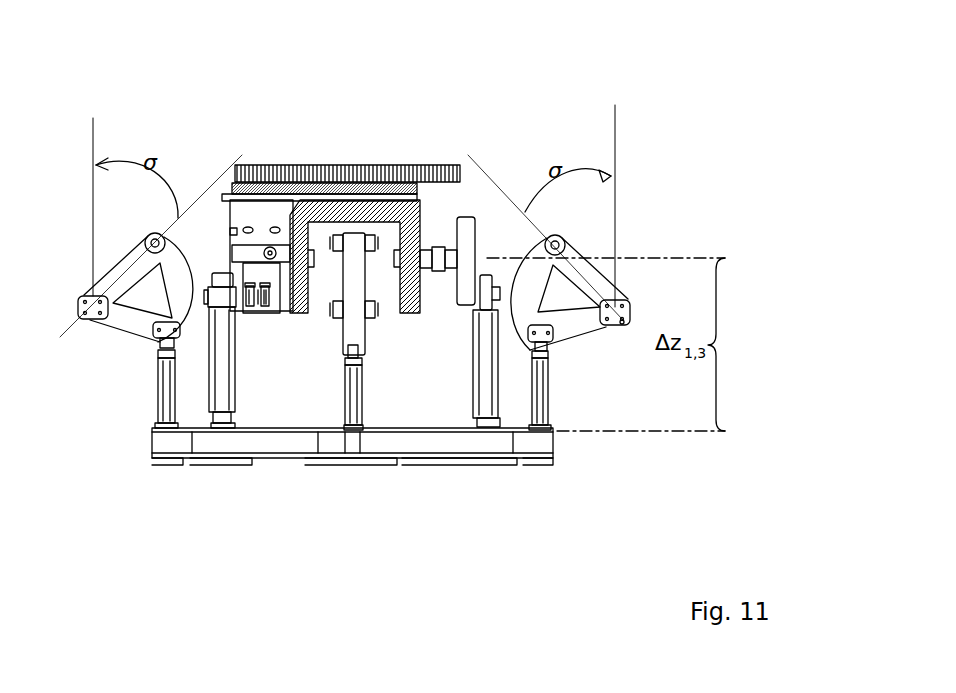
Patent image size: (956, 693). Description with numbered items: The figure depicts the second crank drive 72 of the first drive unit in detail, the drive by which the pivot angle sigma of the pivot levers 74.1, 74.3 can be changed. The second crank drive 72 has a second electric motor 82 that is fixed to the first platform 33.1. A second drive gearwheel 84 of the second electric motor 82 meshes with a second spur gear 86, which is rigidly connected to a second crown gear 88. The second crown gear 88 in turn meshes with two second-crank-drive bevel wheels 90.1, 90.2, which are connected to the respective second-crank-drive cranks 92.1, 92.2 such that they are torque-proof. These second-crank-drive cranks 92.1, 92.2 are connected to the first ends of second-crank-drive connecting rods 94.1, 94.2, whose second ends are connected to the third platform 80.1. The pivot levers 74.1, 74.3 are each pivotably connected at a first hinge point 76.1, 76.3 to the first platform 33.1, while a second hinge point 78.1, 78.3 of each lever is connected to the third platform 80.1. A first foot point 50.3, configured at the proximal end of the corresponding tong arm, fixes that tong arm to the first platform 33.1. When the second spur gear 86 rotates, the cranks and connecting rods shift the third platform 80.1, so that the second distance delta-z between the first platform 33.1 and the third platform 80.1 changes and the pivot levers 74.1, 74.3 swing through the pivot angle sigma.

The second crank drive 72 is at (527, 114).
The second electric motor 82 is at (240, 222).
The second drive gearwheel 84 is at (258, 168).
The second spur gear 86 is at (350, 168).
The second crown gear 88 is at (390, 207).
The second-crank-drive bevel wheel 90.1 is at (417, 222).
The second-crank-drive bevel wheel 90.2 is at (297, 307).
The second-crank-drive crank 92.1 is at (465, 280).
The second-crank-drive crank 92.2 is at (238, 288).
The second-crank-drive connecting rod 94.1 is at (487, 385).
The second-crank-drive connecting rod 94.2 is at (220, 398).
The third platform 80.1 is at (528, 448).
The pivot lever 74.1 is at (130, 255).
The pivot lever 74.3 is at (595, 270).
The first hinge point 76.1 is at (85, 312).
The first hinge point 76.3 is at (623, 307).
The second hinge point 78.1 is at (158, 343).
The second hinge point 78.3 is at (547, 350).
The first foot point 50.3 is at (565, 238).
The first platform 33.1 is at (618, 323).